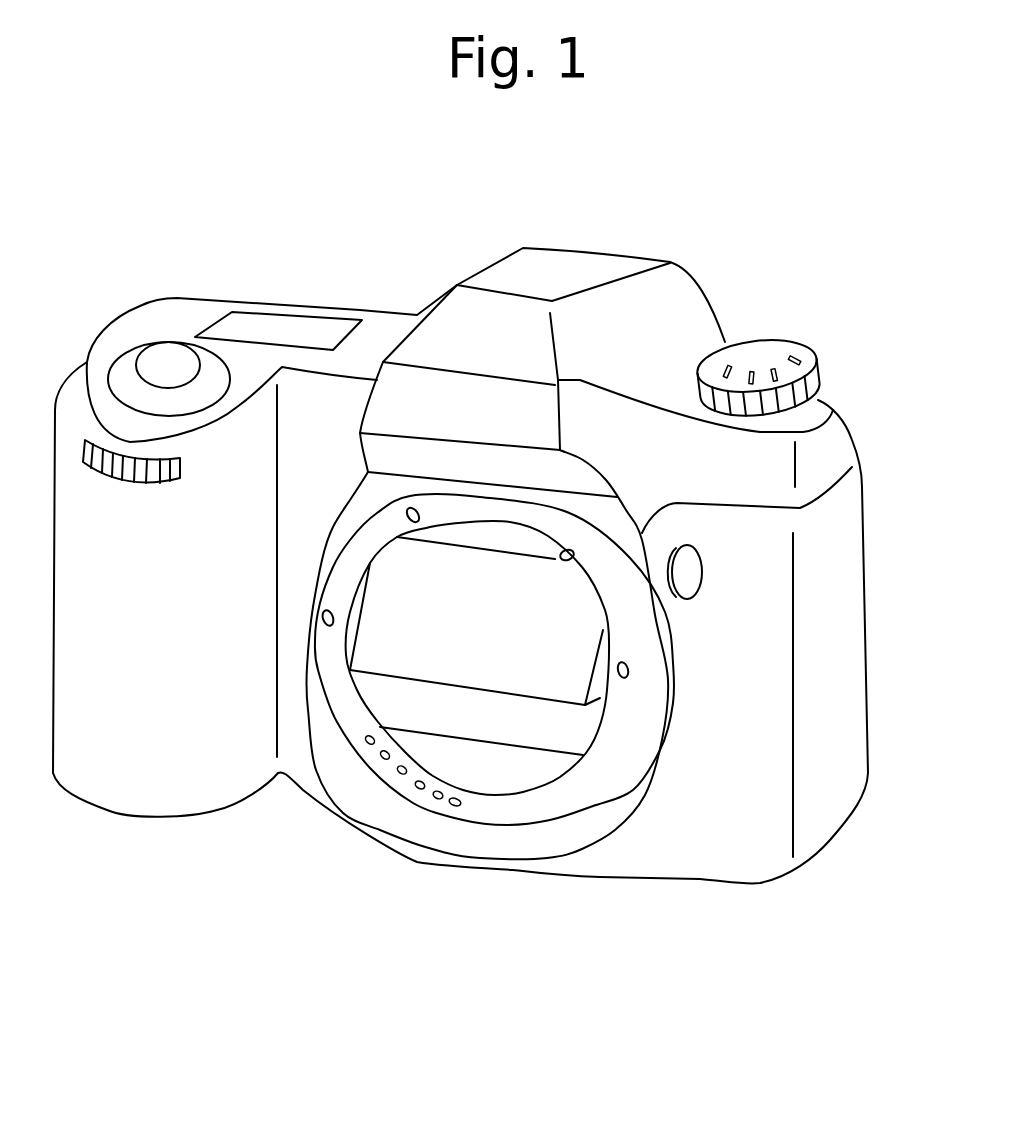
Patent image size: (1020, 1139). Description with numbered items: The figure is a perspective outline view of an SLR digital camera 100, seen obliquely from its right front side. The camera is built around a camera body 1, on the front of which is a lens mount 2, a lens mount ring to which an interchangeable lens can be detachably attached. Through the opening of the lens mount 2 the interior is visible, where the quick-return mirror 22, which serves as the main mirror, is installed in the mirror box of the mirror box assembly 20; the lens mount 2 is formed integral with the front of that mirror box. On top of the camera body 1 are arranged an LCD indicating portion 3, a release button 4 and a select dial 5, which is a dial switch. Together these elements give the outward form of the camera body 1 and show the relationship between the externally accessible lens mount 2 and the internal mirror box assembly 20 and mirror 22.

The digital camera 100 is at (839, 155).
The camera body 1 is at (720, 852).
The lens mount 2 is at (487, 808).
The LCD indicating portion 3 is at (293, 333).
The release button 4 is at (155, 367).
The select dial 5 is at (755, 353).
The mirror box assembly 20 is at (527, 770).
The quick-return mirror 22 is at (407, 647).